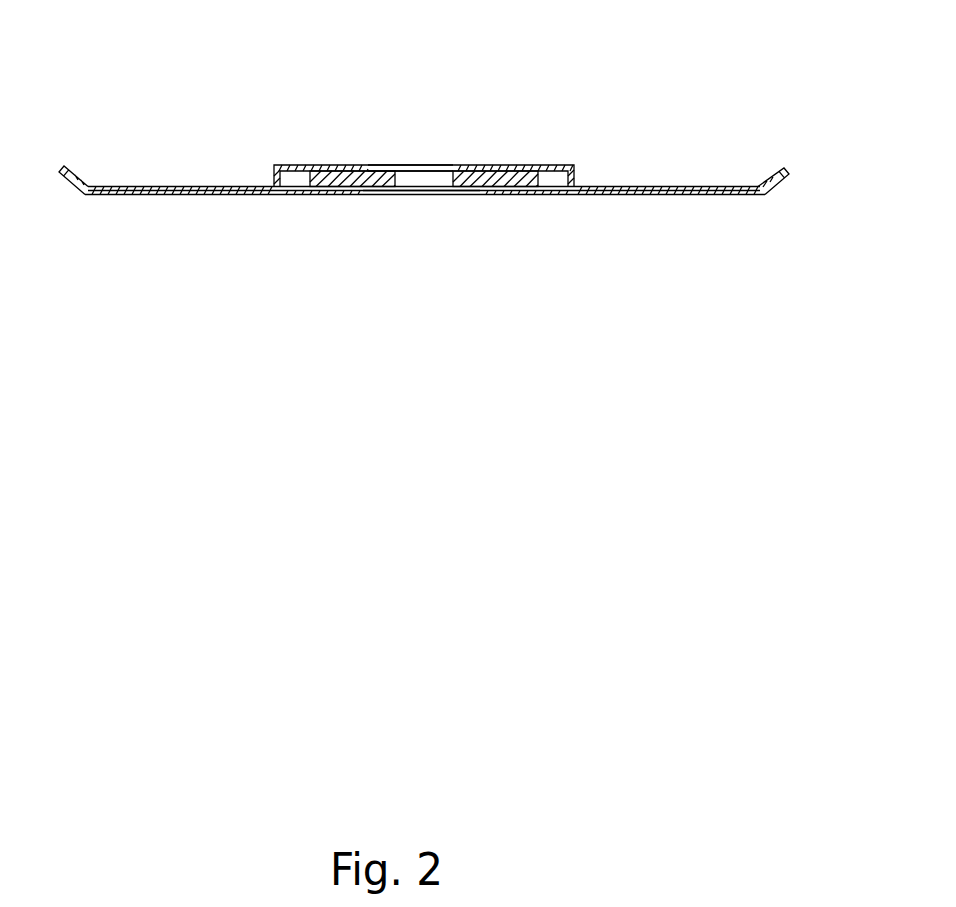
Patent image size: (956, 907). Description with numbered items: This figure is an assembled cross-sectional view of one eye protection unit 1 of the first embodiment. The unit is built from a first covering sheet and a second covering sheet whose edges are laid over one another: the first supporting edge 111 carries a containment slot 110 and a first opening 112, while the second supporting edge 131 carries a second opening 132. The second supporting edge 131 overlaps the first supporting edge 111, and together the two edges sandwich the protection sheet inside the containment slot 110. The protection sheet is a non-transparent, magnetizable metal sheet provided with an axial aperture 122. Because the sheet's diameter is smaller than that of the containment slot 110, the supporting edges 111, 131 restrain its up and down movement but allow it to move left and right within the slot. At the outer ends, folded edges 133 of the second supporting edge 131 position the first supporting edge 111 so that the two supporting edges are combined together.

The eye protection unit 1 is at (142, 90).
The containment slot 110 is at (572, 168).
The first supporting edge 111 is at (658, 186).
The first opening 112 is at (465, 165).
The axial aperture 122 is at (392, 182).
The second supporting edge 131 is at (587, 195).
The second opening 132 is at (417, 195).
The folded edges 133 is at (780, 186).